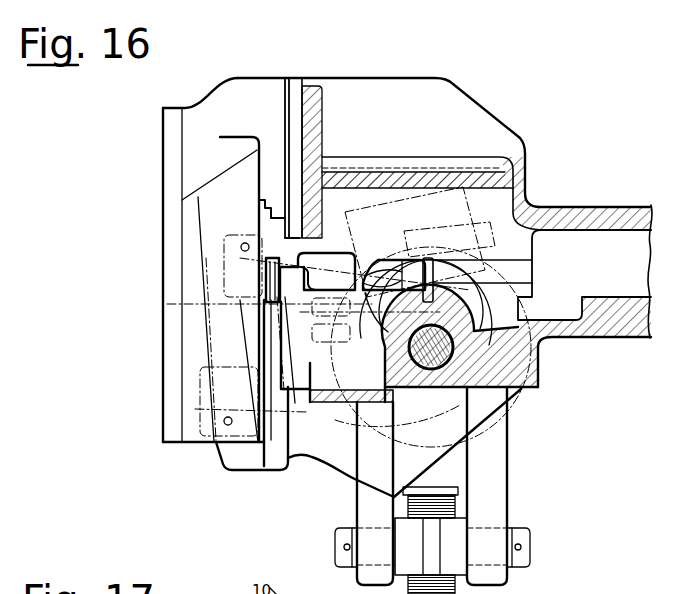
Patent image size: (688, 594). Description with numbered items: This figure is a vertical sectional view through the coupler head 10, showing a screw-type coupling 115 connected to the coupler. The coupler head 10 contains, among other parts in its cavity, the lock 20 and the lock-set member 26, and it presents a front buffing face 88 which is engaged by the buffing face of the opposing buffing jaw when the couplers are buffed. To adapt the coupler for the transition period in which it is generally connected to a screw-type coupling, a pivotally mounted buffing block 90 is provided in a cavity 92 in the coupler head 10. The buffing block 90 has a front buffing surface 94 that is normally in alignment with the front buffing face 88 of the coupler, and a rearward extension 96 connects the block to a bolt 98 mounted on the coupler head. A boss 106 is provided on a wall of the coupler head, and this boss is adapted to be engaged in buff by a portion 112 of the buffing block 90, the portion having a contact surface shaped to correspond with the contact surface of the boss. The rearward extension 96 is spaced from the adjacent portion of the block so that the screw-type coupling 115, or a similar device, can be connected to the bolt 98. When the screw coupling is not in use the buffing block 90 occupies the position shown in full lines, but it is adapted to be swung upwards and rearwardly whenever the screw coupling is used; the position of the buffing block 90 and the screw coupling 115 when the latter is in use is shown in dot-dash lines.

The coupler head 10 is at (466, 97).
The lock 20 is at (207, 178).
The lock-set member 26 is at (292, 257).
The front buffing face 88 is at (290, 177).
The buffing block 90 is at (491, 226).
The cavity 92 is at (341, 188).
The front buffing surface 94 is at (287, 331).
The rearward extension 96 is at (465, 308).
The bolt 98 is at (404, 391).
The boss 106 is at (455, 288).
The portion 112 is at (360, 328).
The screw-type coupling 115 is at (265, 257).